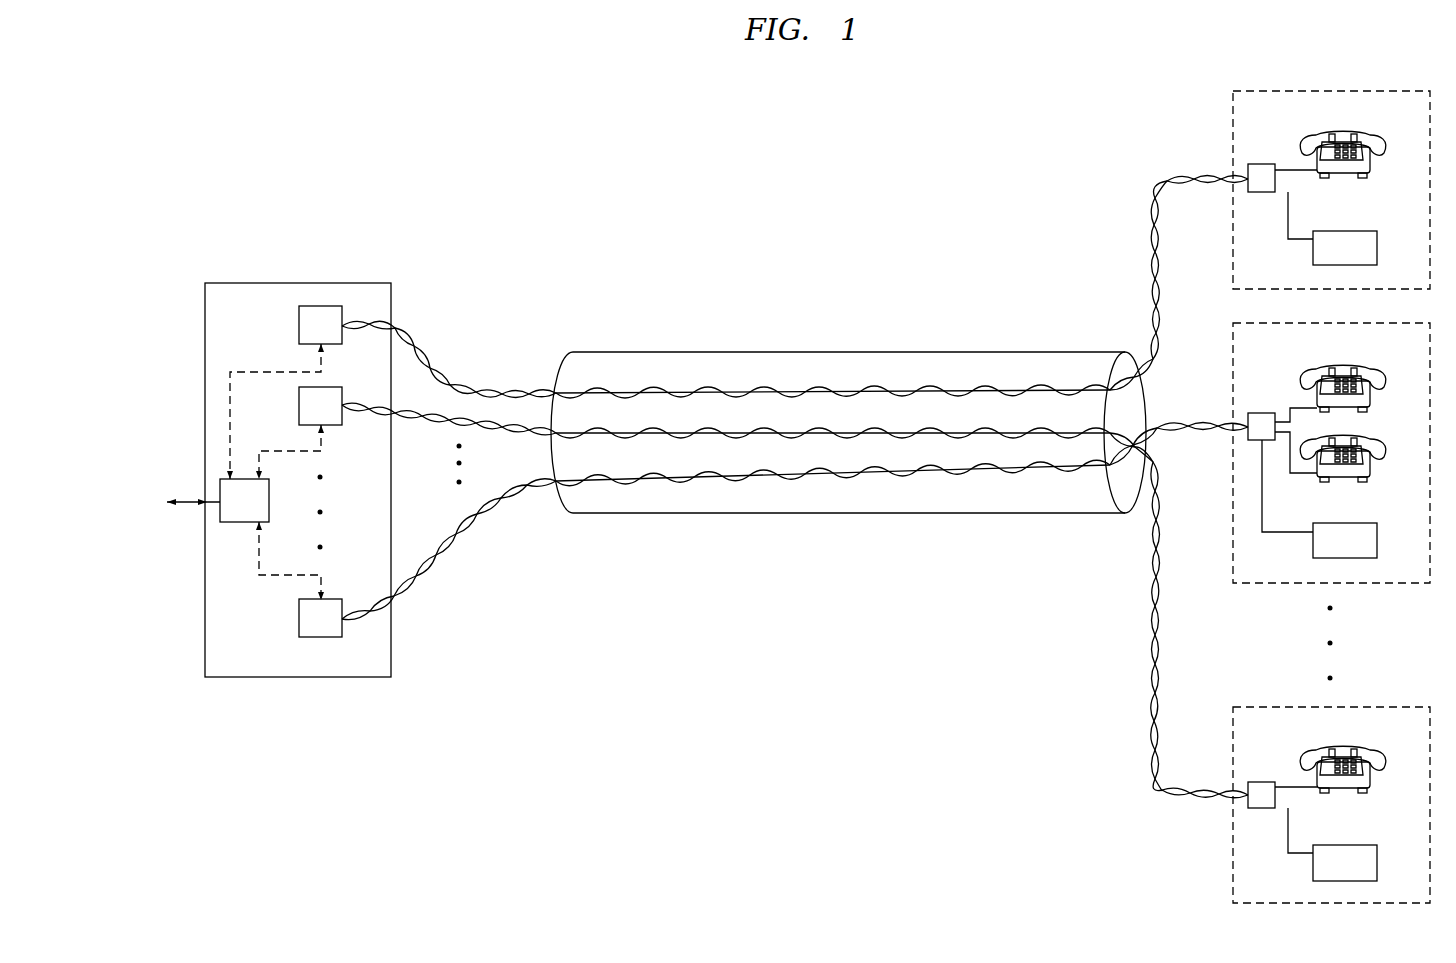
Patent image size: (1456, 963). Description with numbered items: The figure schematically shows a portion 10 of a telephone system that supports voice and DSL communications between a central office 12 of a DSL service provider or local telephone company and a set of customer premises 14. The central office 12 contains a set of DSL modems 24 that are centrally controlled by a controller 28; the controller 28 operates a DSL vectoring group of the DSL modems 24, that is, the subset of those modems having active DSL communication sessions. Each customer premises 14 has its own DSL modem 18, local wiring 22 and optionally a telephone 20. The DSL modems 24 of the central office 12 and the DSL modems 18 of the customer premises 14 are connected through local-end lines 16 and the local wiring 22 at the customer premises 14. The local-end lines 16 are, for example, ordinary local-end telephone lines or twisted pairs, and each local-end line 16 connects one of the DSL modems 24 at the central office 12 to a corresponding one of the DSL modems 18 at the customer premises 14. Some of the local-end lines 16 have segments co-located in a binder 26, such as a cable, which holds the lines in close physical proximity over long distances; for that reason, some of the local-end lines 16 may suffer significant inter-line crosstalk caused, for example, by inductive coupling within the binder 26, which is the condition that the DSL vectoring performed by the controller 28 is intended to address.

The portion of a telephone system 10 is at (757, 240).
The central office 12 is at (238, 602).
The customer premises 14 is at (1268, 884).
The local-end line 16 is at (453, 337).
The DSL modem 18 is at (1363, 230).
The telephone 20 is at (1363, 128).
The local wiring 22 is at (1240, 203).
The DSL modem 24 is at (283, 640).
The binder 26 is at (860, 351).
The controller 28 is at (256, 512).